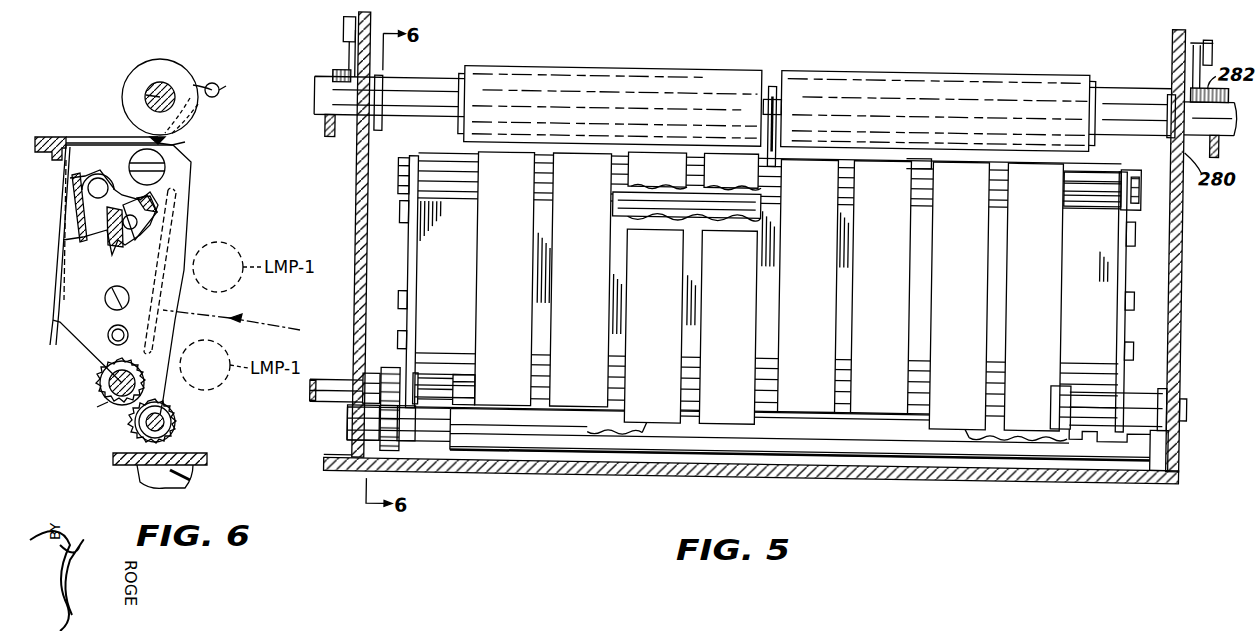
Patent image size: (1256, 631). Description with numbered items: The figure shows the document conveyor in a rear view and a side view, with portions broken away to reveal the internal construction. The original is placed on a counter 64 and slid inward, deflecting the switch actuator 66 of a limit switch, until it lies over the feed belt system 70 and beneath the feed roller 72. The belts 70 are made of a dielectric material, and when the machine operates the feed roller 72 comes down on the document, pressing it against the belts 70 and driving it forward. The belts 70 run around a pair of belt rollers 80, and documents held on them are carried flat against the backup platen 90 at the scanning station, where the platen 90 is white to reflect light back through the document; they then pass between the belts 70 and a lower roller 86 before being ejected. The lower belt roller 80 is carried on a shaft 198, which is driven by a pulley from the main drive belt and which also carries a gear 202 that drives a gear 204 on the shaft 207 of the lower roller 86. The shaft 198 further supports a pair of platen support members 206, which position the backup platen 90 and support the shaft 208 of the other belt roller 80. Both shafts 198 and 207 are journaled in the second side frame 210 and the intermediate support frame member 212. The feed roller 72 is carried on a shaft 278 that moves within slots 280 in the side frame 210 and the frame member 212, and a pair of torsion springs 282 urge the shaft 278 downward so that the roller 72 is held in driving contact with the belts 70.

In FIG. 6, the counter 64 is at (52, 137).
In FIG. 6, the switch actuator 66 is at (146, 134).
In FIG. 5, the switch actuator 66 is at (777, 132).
In FIG. 6, the feed belt system 70 is at (172, 144).
In FIG. 5, the feed belt system 70 is at (477, 230).
In FIG. 6, the feed roller 72 is at (185, 63).
In FIG. 5, the feed roller 72 is at (600, 64).
In FIG. 5, the belt rollers 80 is at (724, 222).
In FIG. 5, the lower roller 86 is at (872, 405).
In FIG. 6, the backup platen 90 is at (176, 210).
In FIG. 5, the backup platen 90 is at (465, 312).
In FIG. 6, the shaft 198 is at (97, 407).
In FIG. 5, the shaft 198 is at (340, 404).
In FIG. 6, the gear 202 is at (100, 383).
In FIG. 5, the gear 202 is at (390, 367).
In FIG. 6, the gear 204 is at (172, 428).
In FIG. 5, the gear 204 is at (393, 450).
In FIG. 6, the platen support members 206 is at (186, 158).
In FIG. 5, the platen support members 206 is at (417, 262).
In FIG. 6, the shaft 207 is at (165, 420).
In FIG. 5, the shaft 207 is at (455, 436).
In FIG. 5, the shaft 208 is at (1095, 161).
In FIG. 5, the second side frame 210 is at (355, 212).
In FIG. 5, the intermediate support frame member 212 is at (1182, 330).
In FIG. 6, the shaft 278 is at (146, 95).
In FIG. 5, the shaft 278 is at (412, 90).
In FIG. 5, the slots 280 is at (356, 130).
In FIG. 5, the torsion springs 282 is at (340, 72).